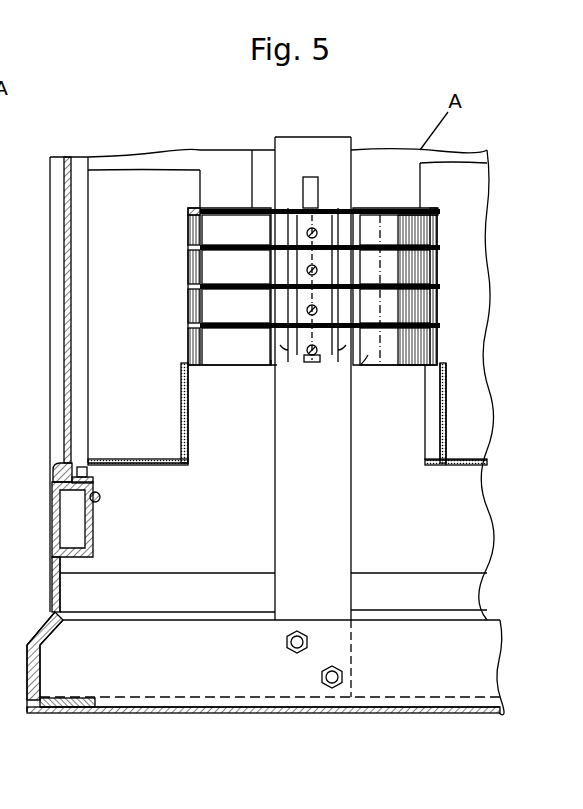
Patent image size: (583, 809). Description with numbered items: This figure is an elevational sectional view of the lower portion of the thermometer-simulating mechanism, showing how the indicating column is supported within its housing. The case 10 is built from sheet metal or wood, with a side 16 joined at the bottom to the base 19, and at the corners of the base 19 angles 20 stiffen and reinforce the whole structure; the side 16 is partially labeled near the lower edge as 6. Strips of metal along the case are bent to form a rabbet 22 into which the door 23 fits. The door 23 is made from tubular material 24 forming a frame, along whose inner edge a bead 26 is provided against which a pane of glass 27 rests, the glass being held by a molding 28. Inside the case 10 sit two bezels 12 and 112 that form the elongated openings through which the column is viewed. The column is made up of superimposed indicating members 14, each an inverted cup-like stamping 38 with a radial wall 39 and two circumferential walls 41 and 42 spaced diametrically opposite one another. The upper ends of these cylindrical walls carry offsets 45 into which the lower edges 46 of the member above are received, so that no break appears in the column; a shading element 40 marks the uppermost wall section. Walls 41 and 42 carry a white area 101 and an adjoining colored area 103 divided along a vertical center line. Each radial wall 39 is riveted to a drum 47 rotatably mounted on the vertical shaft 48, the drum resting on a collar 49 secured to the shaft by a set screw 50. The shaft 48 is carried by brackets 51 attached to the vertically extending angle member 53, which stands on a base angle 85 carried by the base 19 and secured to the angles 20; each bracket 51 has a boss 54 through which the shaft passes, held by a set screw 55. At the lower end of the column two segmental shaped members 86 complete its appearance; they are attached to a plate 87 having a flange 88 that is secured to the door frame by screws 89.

The case 10 is at (156, 153).
The bezel 12 is at (184, 372).
The indicating member 14 is at (440, 342).
The side 16 is at (408, 540).
The base 19 is at (165, 714).
The angle 20 is at (37, 680).
The rabbet 22 is at (78, 557).
The door 23 is at (50, 342).
The tubular material 24 is at (52, 510).
The bead 26 is at (84, 468).
The pane of glass 27 is at (70, 312).
The molding 28 is at (58, 465).
The inverted cup-like stamping 38 is at (236, 192).
The radial wall 39 is at (178, 312).
The top spring element 40 is at (188, 232).
The circumferential wall 41 is at (408, 312).
The circumferential wall 42 is at (190, 300).
The offset 45 is at (192, 210).
The lower edge 46 is at (412, 248).
The drum 47 is at (340, 205).
The shaft 48 is at (318, 178).
The collar 49 is at (340, 232).
The set screw 50 is at (300, 265).
The bracket 51 is at (278, 365).
The angle member 53 is at (297, 480).
The boss 54 is at (302, 356).
The set screw 55 is at (318, 352).
The base angle 85 is at (200, 635).
The segmental shaped member 86 is at (184, 398).
The plate 87 is at (155, 460).
The flange 88 is at (97, 480).
The screw 89 is at (99, 505).
The white area 101 is at (378, 345).
The colored area 103 is at (190, 336).
The bezel 112 is at (446, 422).
The edge element 6 is at (4, 752).